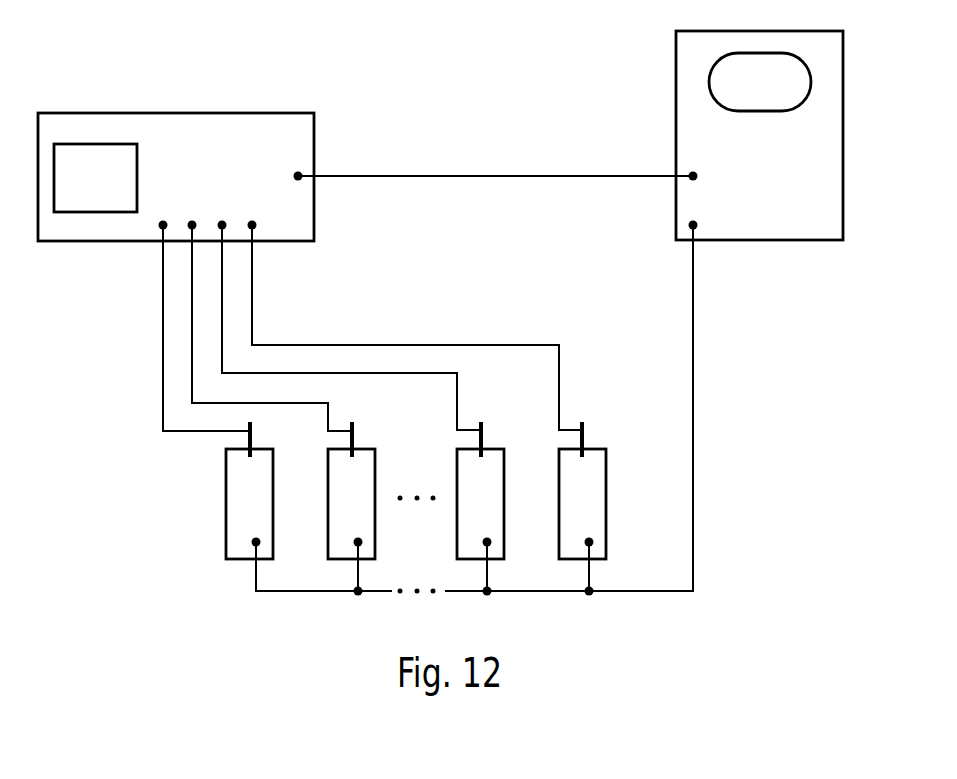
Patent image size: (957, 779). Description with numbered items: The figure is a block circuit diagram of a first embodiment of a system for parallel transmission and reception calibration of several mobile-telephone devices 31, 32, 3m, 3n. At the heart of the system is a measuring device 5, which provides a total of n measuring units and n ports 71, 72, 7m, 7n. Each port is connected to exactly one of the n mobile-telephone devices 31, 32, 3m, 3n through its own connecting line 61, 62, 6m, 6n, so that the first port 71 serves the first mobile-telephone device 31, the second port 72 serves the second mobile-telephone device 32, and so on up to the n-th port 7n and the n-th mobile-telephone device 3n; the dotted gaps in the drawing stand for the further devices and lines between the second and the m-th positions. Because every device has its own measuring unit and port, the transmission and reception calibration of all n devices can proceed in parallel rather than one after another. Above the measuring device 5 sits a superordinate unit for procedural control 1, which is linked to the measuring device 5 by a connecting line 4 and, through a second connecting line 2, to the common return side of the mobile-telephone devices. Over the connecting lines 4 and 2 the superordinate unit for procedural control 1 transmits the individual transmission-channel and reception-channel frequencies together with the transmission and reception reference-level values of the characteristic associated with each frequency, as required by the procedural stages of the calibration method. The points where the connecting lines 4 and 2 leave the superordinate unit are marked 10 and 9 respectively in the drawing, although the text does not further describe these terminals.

The superordinate unit for procedural control 1 is at (843, 143).
The connecting line 2 is at (694, 316).
The mobile-telephone device 3n is at (260, 517).
The mobile-telephone device 3m is at (362, 517).
The mobile-telephone device 32 is at (491, 517).
The mobile-telephone device 31 is at (593, 517).
The connecting line 4 is at (498, 176).
The measuring device 5 is at (250, 113).
The connecting line 6n is at (163, 360).
The connecting line 6m is at (192, 318).
The connecting line 62 is at (222, 271).
The connecting line 61 is at (252, 313).
The port 7n is at (165, 206).
The port 7m is at (198, 206).
The port 72 is at (224, 206).
The port 71 is at (254, 206).
The terminal 9 is at (704, 224).
The terminal 10 is at (712, 176).